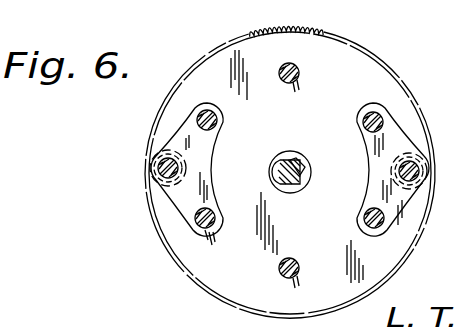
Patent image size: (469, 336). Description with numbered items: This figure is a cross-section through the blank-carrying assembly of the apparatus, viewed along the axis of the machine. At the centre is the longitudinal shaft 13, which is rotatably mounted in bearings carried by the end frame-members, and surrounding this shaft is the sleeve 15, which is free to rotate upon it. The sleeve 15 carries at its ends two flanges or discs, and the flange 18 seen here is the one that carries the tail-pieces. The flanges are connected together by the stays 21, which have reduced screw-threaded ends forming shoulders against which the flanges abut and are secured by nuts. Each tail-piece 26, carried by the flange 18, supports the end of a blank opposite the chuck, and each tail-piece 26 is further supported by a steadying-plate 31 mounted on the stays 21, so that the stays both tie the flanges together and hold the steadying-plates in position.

The flange 18 is at (290, 160).
The stays 21 is at (297, 75).
The tail-piece 26 is at (160, 172).
The steadying-plate 31 is at (202, 153).
The shaft 13 is at (301, 183).
The sleeve 15 is at (297, 158).